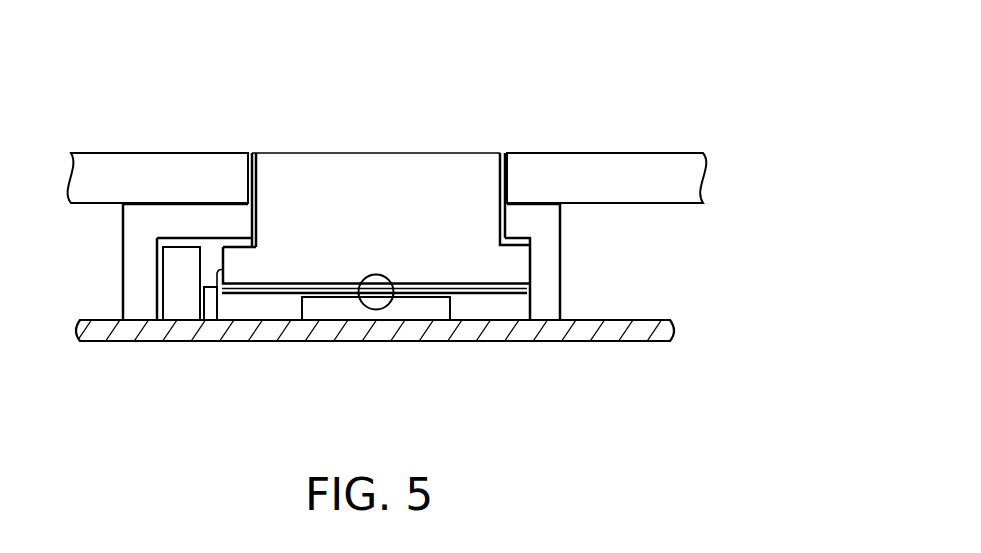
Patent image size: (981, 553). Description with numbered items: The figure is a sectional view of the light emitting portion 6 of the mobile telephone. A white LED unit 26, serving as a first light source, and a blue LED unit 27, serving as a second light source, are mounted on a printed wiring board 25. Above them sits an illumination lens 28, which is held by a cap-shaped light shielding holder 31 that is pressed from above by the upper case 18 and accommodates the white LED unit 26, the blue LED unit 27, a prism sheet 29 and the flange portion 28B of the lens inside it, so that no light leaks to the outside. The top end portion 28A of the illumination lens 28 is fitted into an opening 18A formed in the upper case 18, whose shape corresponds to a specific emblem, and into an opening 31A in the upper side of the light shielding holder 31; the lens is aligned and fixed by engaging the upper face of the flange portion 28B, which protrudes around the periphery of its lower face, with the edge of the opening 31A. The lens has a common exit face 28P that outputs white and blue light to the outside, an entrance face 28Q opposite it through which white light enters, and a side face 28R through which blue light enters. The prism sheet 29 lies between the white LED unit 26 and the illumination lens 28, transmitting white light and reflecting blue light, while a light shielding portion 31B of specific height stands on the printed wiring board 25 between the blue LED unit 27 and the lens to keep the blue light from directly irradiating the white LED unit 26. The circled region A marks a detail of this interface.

The light emitting portion 6 is at (371, 232).
The upper case 18 is at (663, 167).
The opening 18A is at (255, 173).
The printed wiring board 25 is at (637, 330).
The white LED unit 26 is at (455, 303).
The blue LED unit 27 is at (177, 292).
The illumination lens 28 is at (371, 244).
The top end portion 28A is at (277, 202).
The flange portion 28B is at (515, 262).
The exit face 28P is at (368, 153).
The entrance face 28Q is at (503, 293).
The side face 28R is at (218, 272).
The prism sheet 29 is at (285, 290).
The light shielding holder 31 is at (112, 237).
The opening 31A is at (503, 220).
The light shielding portion 31B is at (210, 308).
The detail region A is at (375, 310).